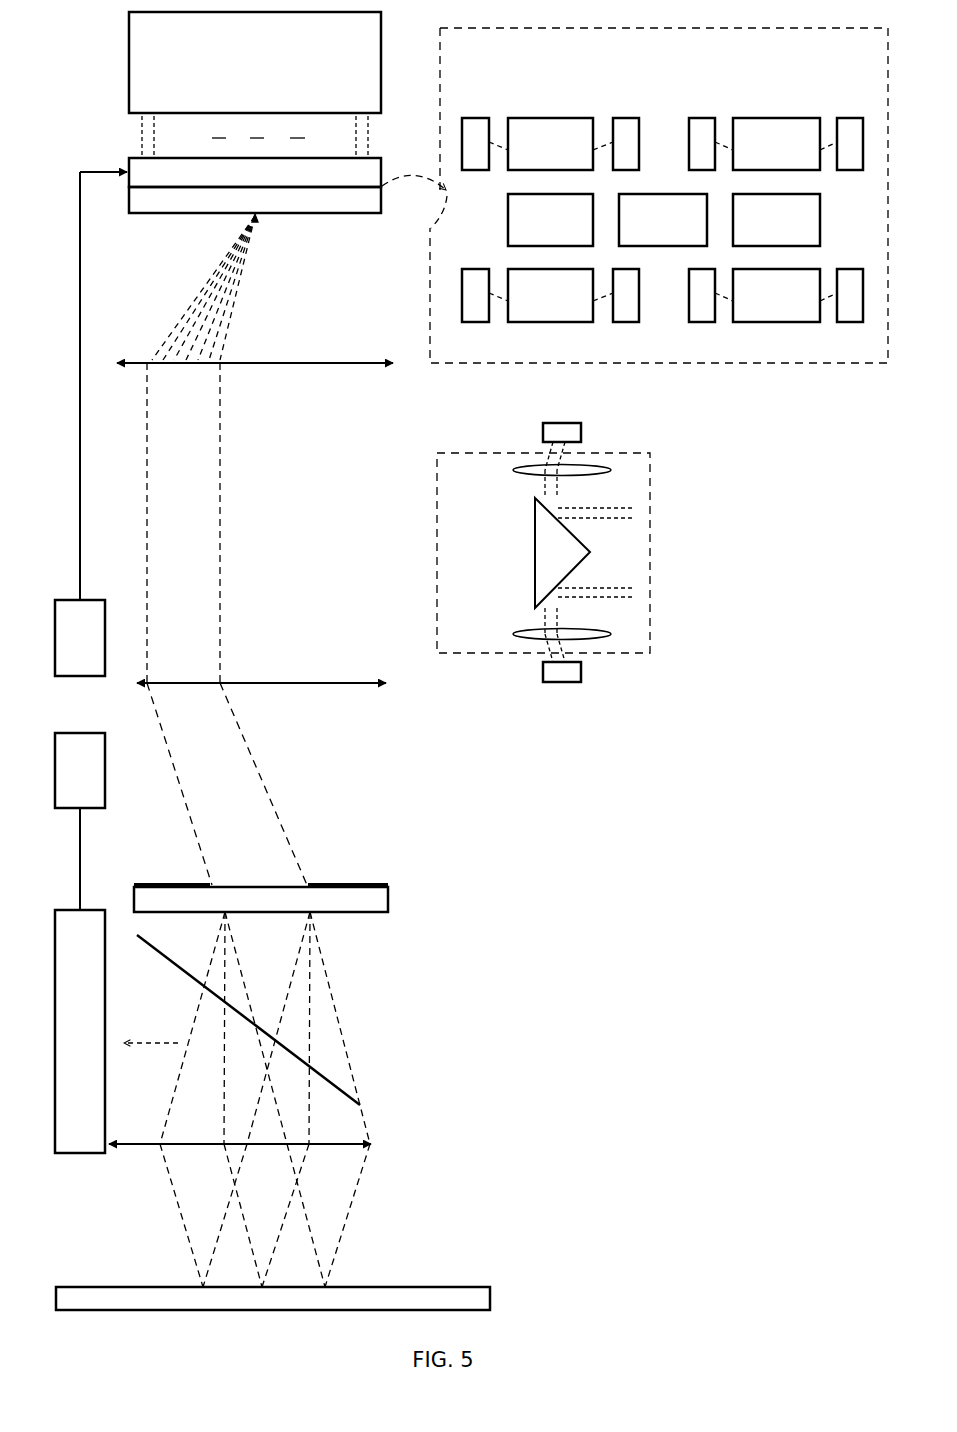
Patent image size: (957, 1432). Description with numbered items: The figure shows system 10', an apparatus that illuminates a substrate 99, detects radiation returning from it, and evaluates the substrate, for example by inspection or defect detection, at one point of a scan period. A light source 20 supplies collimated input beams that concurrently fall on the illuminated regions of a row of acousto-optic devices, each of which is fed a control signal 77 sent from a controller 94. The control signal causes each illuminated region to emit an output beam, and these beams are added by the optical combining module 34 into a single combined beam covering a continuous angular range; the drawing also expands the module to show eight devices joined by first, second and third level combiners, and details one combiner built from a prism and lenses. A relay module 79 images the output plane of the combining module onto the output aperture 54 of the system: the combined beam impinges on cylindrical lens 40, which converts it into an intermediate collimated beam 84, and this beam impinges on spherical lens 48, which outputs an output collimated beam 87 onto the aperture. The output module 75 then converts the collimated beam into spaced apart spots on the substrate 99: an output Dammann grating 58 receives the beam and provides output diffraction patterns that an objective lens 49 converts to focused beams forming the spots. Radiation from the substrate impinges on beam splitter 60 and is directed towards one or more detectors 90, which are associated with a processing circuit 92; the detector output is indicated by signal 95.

The light source 20 is at (243, 73).
The optical combining module 34 is at (243, 211).
The relay module 79 is at (76, 161).
The control signal 77 is at (80, 312).
The cylindrical lens 40 is at (381, 362).
The intermediate collimated beam 84 is at (172, 474).
The spherical lens 48 is at (285, 684).
The output collimated beam 87 is at (211, 770).
The controller 94 is at (69, 649).
The processing circuit 92 is at (69, 781).
The detectors 90 is at (67, 1043).
The detected signal 95 is at (151, 1031).
The output Dammann grating 58 is at (251, 911).
The output aperture 54 is at (245, 884).
The beam splitter 60 is at (170, 962).
The output module 75 is at (570, 995).
The objective lens 49 is at (367, 1138).
The substrate 99 is at (262, 1309).
The system 10' is at (538, 1297).